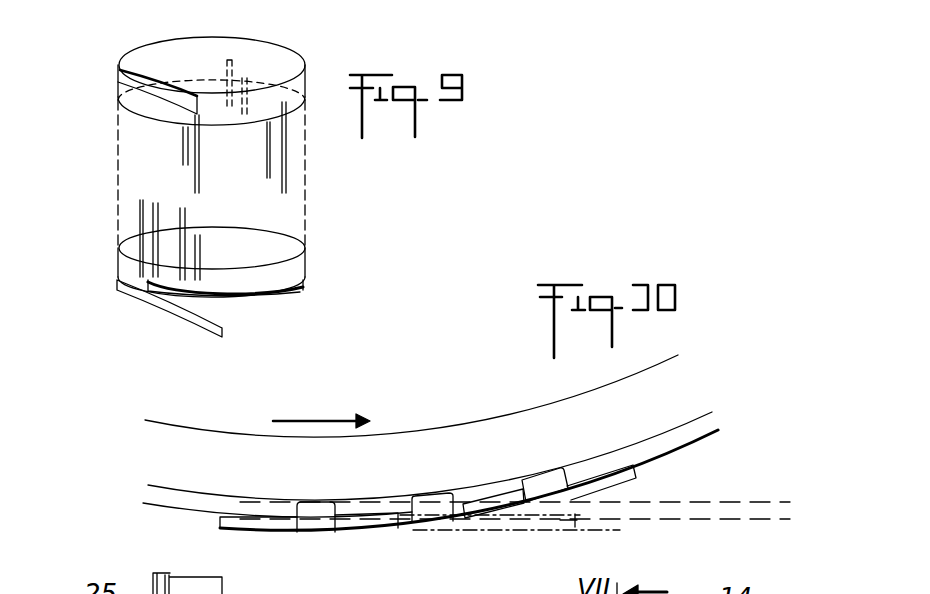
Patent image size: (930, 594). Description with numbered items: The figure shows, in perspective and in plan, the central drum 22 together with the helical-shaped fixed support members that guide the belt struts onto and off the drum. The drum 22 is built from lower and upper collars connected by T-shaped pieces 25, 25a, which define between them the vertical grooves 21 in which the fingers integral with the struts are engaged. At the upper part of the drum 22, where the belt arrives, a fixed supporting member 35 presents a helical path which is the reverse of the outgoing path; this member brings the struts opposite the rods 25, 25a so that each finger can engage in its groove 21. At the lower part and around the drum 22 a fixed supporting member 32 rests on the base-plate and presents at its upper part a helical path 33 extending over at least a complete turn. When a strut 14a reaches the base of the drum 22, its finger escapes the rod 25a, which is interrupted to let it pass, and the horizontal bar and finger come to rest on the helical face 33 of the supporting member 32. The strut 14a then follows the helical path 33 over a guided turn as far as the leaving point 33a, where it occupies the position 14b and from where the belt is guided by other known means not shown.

In FIG. 9, the vertical groove 21 is at (150, 249).
In FIG. 9, the central drum 22 is at (272, 247).
In FIG. 10, the central drum 22 is at (399, 458).
In FIG. 9, the T-shaped piece 25 is at (140, 220).
In FIG. 9, the T-shaped piece 25a is at (157, 203).
In FIG. 9, the fixed supporting member 35 is at (158, 93).
In FIG. 9, the helical path 33 is at (285, 301).
In FIG. 10, the helical path 33 is at (716, 433).
In FIG. 9, the leaving point 33a is at (197, 328).
In FIG. 10, the leaving point 33a is at (638, 508).
In FIG. 9, the supporting member 32 is at (267, 303).
In FIG. 10, the strut 14a is at (440, 505).
In FIG. 10, the strut position 14b is at (490, 522).